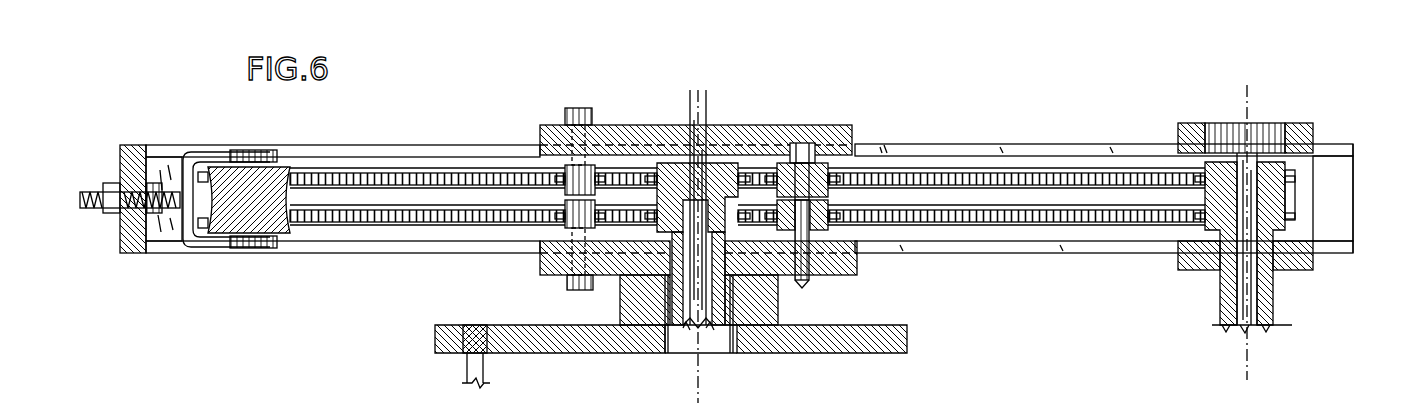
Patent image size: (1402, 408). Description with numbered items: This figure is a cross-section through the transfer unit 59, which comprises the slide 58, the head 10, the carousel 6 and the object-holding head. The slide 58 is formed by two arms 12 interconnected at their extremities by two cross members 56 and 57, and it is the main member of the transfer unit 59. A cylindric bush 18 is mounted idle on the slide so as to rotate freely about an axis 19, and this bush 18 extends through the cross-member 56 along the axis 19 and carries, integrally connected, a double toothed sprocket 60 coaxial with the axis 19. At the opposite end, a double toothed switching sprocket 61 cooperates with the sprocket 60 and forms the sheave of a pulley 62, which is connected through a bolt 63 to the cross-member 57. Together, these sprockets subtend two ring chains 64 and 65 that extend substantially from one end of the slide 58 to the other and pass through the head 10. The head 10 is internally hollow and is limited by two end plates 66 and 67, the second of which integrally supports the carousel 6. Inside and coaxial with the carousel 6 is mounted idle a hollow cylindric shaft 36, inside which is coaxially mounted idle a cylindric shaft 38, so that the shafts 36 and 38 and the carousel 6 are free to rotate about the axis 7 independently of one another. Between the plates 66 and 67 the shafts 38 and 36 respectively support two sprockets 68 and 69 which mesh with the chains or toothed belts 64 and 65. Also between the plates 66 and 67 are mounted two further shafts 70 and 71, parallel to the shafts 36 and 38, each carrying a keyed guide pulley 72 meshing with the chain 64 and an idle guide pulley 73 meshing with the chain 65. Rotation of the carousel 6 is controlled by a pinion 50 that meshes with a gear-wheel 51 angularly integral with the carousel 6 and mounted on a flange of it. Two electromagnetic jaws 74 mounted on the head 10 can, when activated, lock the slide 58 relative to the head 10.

The carousel 6 is at (666, 356).
The axis 7 is at (703, 96).
The head 10 is at (627, 126).
The arm 12 is at (1328, 170).
The cylindric bush 18 is at (1276, 287).
The axis 19 is at (1250, 378).
The hollow cylindric shaft 36 is at (723, 330).
The cylindric shaft 38 is at (689, 328).
The gear 50 is at (466, 326).
The gear-wheel 51 is at (906, 340).
The cross member 56 is at (1297, 128).
The cross member 57 is at (137, 146).
The slide 58 is at (904, 142).
The transfer unit 59 is at (1070, 134).
The double toothed sprocket 60 is at (1290, 205).
The double toothed switching sprocket 61 is at (268, 168).
The pulley 62 is at (186, 148).
The bolt 63 is at (173, 214).
The ring chain 64 is at (447, 176).
The ring chain 65 is at (420, 222).
The end plate 66 is at (822, 128).
The end plate 67 is at (843, 268).
The sprocket 68 is at (680, 170).
The sprocket 69 is at (655, 180).
The shaft 70 is at (590, 270).
The shaft 71 is at (812, 280).
The guide pulley 72 is at (580, 168).
The guide pulley 73 is at (572, 208).
The electromagnetic jaw 74 is at (574, 108).